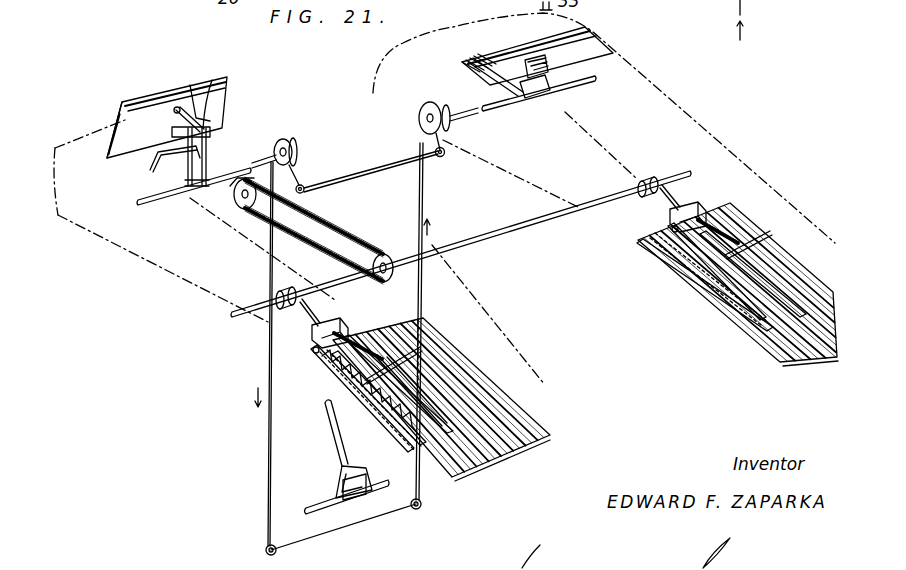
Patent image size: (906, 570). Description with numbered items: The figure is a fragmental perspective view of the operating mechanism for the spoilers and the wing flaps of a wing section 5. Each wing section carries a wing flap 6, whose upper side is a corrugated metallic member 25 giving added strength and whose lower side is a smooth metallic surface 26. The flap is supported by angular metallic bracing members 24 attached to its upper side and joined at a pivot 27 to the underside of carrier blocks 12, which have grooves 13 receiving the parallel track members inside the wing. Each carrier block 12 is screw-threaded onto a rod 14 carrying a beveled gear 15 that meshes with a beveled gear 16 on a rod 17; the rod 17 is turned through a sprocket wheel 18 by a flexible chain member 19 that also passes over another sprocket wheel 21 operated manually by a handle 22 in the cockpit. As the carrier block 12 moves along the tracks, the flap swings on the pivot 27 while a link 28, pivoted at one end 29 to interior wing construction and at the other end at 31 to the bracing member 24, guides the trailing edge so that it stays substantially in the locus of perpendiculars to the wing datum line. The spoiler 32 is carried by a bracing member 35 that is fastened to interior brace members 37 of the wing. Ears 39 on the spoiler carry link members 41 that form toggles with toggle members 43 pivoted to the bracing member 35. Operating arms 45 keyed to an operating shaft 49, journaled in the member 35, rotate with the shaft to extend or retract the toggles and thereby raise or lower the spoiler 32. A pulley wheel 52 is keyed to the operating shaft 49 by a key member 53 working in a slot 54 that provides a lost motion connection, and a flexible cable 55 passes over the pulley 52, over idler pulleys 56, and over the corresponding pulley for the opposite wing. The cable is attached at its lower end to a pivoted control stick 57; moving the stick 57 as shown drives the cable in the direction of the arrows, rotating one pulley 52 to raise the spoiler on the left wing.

The wing section 5 is at (162, 272).
The wing flap 6 is at (532, 447).
The carrier block 12 is at (346, 318).
The groove 13 is at (316, 338).
The rod 14 is at (322, 319).
The beveled gear 15 is at (276, 314).
The beveled gear 16 is at (276, 298).
The rod 17 is at (238, 312).
The sprocket wheel 18 is at (388, 254).
The flexible chain member 19 is at (364, 226).
The sprocket wheel 21 is at (255, 208).
The handle 22 is at (234, 195).
The bracing member 24 is at (370, 420).
The corrugated metallic member 25 is at (505, 380).
The smooth metallic surface 26 is at (390, 440).
The pivot 27 is at (314, 360).
The link 28 is at (394, 333).
The pivot 29 is at (438, 337).
The pivot 31 is at (335, 390).
The spoiler 32 is at (141, 97).
The bracing member 35 is at (158, 162).
The interior brace member 37 is at (537, 56).
The ear 39 is at (179, 100).
The link member 41 is at (209, 84).
The toggle member 43 is at (208, 133).
The operating arm 45 is at (212, 150).
The operating shaft 49 is at (164, 200).
The pulley wheel 52 is at (295, 136).
The key member 53 is at (297, 146).
The slot 54 is at (296, 163).
The flexible cable 55 is at (386, 167).
The idler pulley 56 is at (306, 192).
The control stick 57 is at (332, 455).